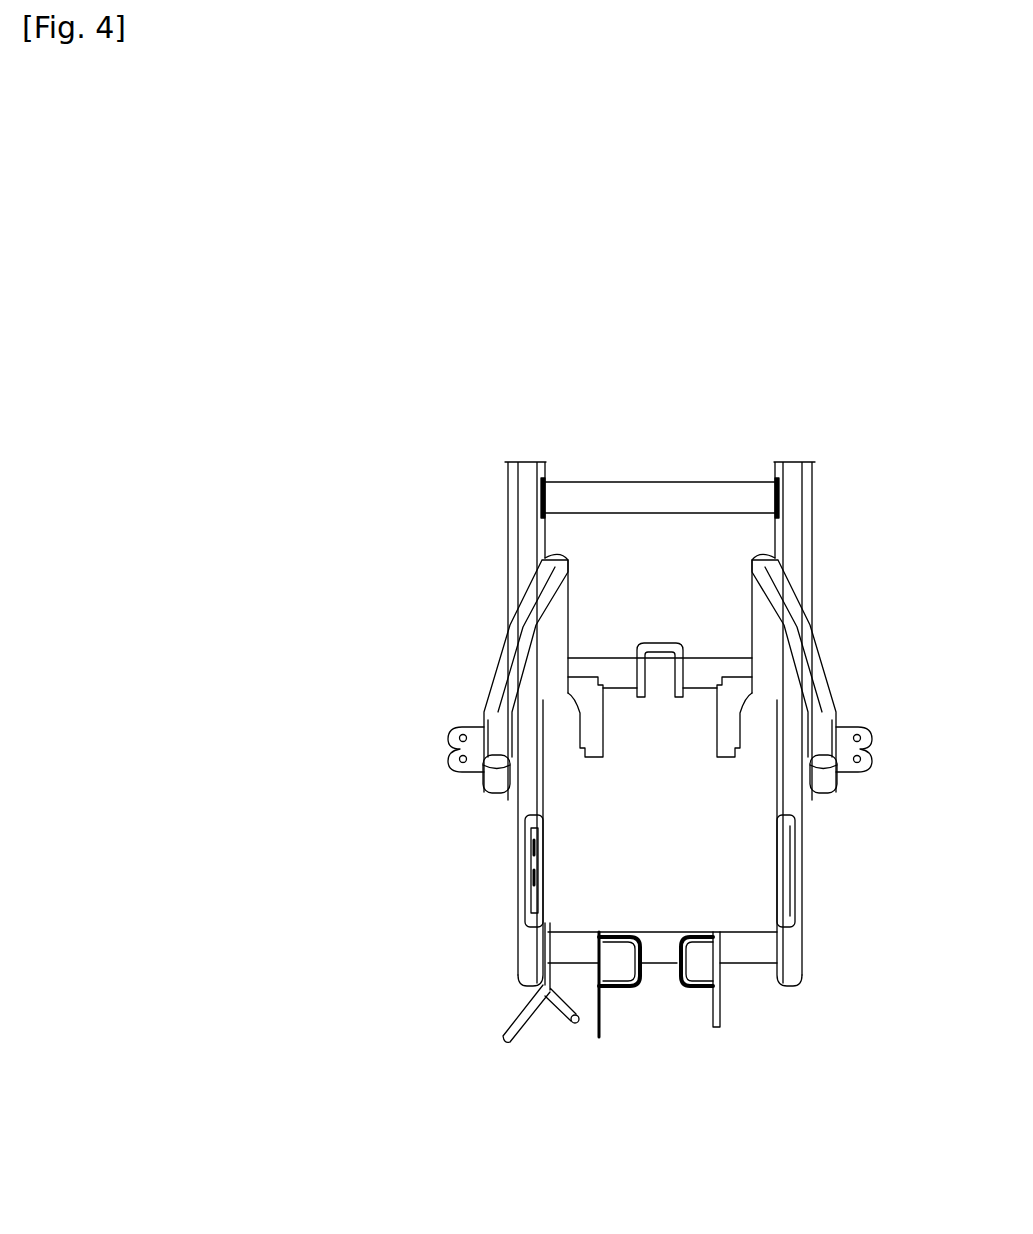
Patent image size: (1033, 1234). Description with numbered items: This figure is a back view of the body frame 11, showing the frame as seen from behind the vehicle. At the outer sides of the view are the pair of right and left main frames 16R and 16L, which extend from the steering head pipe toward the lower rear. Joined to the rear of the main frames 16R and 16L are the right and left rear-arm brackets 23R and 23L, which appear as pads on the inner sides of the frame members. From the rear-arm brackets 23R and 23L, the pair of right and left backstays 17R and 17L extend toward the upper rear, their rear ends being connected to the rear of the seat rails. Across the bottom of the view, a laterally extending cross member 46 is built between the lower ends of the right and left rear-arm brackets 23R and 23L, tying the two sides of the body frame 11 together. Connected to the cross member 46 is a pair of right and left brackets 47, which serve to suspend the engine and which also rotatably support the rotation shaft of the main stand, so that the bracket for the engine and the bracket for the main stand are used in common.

The body frame 11 is at (667, 430).
The left main frame 16L is at (507, 568).
The right main frame 16R is at (813, 545).
The left backstay 17L is at (556, 652).
The right backstay 17R is at (762, 652).
The left rear-arm bracket 23L is at (516, 890).
The right rear-arm bracket 23R is at (805, 880).
The cross member 46 is at (663, 935).
The brackets 47 is at (603, 1018).